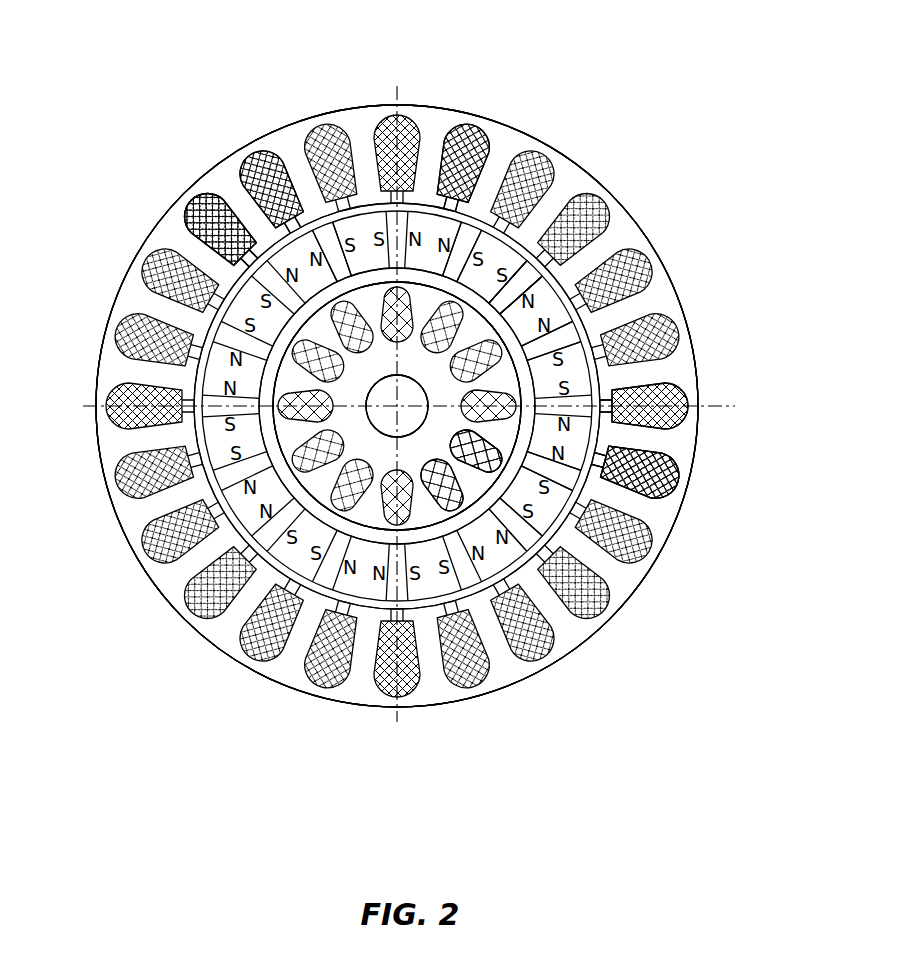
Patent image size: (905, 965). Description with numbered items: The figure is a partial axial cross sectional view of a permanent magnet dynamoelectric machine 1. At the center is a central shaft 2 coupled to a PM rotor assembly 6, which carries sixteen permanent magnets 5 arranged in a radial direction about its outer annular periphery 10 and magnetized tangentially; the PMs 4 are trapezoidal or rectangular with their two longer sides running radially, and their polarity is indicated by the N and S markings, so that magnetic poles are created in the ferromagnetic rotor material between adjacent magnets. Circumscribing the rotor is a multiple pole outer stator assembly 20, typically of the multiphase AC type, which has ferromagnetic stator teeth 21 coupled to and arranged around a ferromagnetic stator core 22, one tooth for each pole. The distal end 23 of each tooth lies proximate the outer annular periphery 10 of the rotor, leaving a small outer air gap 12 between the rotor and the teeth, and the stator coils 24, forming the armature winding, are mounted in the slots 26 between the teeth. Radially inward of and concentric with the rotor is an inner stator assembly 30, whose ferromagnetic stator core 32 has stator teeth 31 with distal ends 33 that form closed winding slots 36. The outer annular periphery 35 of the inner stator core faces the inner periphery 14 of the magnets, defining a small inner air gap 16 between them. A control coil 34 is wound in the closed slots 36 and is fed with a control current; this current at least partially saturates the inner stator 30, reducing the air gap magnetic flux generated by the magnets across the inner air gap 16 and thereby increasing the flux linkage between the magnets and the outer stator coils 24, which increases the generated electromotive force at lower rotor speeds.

The permanent magnet dynamoelectric machine 1 is at (634, 98).
The central shaft 2 is at (420, 399).
The permanent magnets 4 is at (488, 297).
The permanent magnets 5 is at (530, 272).
The PM rotor assembly 6 is at (316, 238).
The outer annular periphery 10 is at (608, 358).
The outer air gap 12 is at (602, 397).
The inner periphery 14 is at (603, 456).
The inner air gap 16 is at (525, 416).
The outer stator assembly 20 is at (234, 128).
The stator teeth 21 is at (247, 214).
The stator core 22 is at (512, 140).
The distal end 23 is at (257, 246).
The stator coils 24 is at (474, 138).
The slots 26 is at (503, 255).
The inner stator assembly 30 is at (763, 270).
The stator teeth 31 is at (487, 463).
The stator core 32 is at (555, 318).
The distal ends 33 is at (553, 487).
The control coil 34 is at (490, 467).
The outer annular periphery 35 is at (475, 488).
The closed winding slots 36 is at (478, 388).